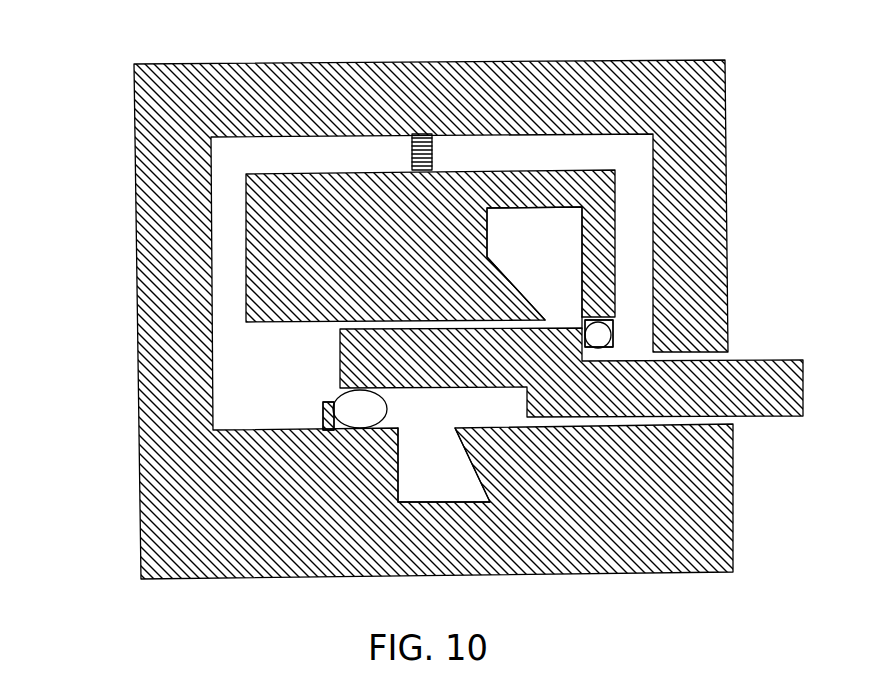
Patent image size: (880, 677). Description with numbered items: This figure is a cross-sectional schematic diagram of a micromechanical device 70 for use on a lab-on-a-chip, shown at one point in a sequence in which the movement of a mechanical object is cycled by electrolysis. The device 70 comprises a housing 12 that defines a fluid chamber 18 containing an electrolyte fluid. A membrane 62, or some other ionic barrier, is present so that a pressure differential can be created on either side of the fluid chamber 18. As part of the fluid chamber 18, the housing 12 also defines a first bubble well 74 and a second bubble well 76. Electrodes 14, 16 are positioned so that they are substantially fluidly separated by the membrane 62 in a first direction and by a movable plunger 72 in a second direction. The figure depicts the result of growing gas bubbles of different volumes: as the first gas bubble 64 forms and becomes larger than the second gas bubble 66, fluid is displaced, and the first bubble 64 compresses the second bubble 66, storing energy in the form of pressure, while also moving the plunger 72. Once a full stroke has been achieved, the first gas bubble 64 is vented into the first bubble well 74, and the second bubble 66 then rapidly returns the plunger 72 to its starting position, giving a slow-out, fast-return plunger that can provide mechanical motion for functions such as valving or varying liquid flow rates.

The micromechanical device 70 is at (105, 113).
The housing 12 is at (612, 168).
The fluid chamber 18 is at (318, 155).
The membrane 62 is at (437, 133).
The second bubble well 76 is at (548, 246).
The plunger 72 is at (627, 410).
The first bubble well 74 is at (445, 475).
The first gas bubble 64 is at (350, 402).
The second gas bubble 66 is at (600, 347).
The electrode 14 is at (325, 410).
The electrode 16 is at (424, 404).